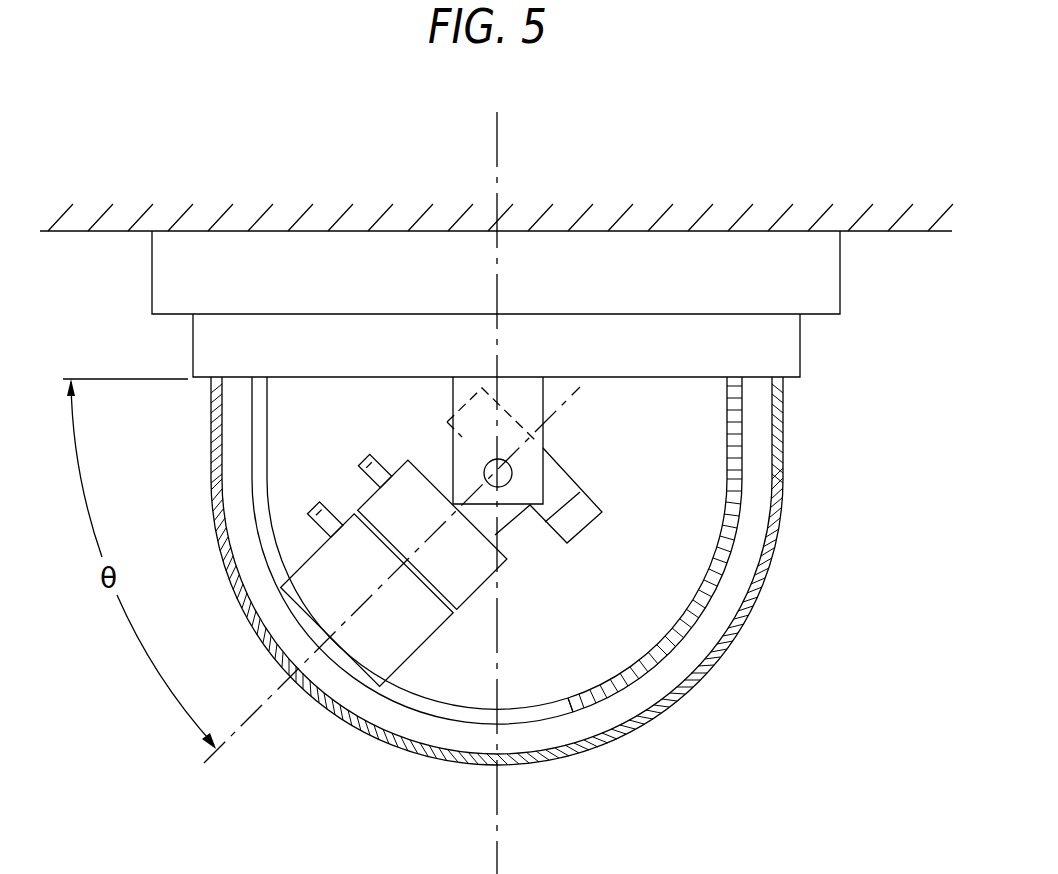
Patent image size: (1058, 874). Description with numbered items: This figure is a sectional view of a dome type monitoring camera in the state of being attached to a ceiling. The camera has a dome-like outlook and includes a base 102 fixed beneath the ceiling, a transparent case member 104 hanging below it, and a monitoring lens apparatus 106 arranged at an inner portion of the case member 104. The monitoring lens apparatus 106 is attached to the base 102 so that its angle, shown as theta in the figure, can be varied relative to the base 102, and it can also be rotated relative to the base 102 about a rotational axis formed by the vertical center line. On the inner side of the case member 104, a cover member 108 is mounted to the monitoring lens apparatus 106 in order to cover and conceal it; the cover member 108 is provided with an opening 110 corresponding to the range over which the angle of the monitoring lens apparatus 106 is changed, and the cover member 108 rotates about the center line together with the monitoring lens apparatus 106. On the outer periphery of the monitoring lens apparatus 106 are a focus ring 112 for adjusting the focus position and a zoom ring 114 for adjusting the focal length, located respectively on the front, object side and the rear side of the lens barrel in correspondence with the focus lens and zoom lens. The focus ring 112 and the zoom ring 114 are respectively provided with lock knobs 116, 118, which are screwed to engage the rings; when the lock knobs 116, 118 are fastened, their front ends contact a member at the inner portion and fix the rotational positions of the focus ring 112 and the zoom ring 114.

The base 102 is at (818, 266).
The case member 104 is at (783, 483).
The monitoring lens apparatus 106 is at (350, 430).
The cover member 108 is at (737, 435).
The opening 110 is at (400, 693).
The focus ring 112 is at (358, 652).
The zoom ring 114 is at (465, 577).
The lock knob 116 is at (318, 508).
The lock knob 118 is at (363, 466).